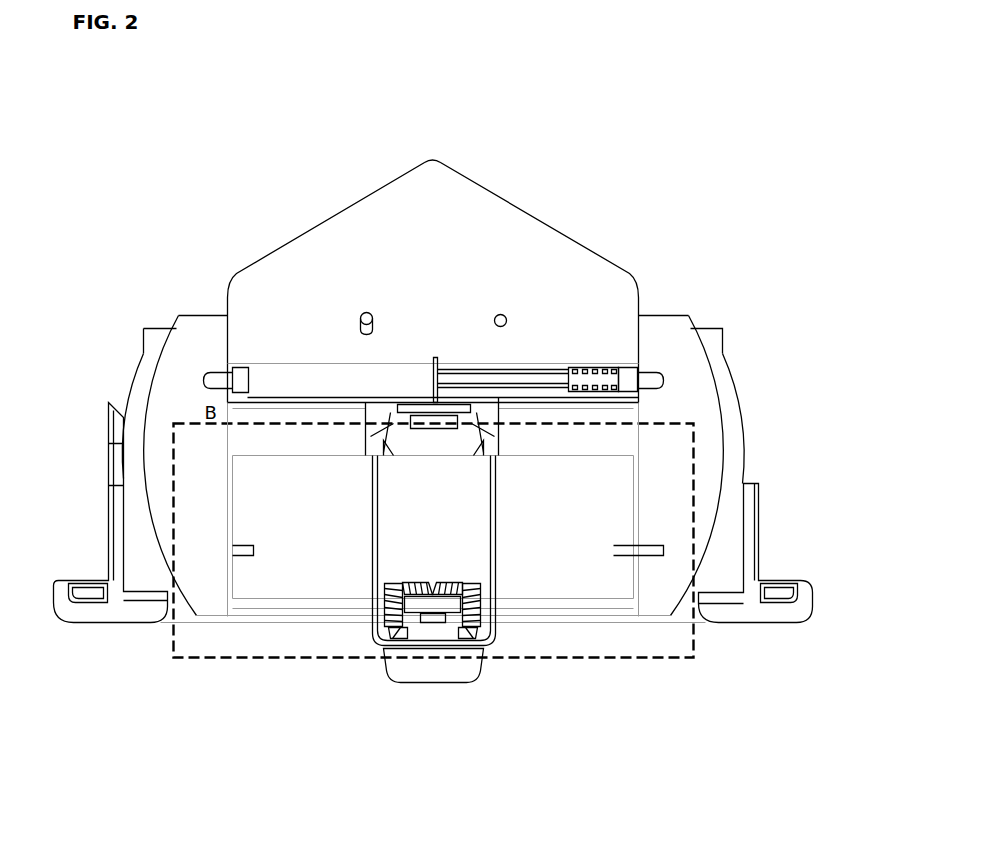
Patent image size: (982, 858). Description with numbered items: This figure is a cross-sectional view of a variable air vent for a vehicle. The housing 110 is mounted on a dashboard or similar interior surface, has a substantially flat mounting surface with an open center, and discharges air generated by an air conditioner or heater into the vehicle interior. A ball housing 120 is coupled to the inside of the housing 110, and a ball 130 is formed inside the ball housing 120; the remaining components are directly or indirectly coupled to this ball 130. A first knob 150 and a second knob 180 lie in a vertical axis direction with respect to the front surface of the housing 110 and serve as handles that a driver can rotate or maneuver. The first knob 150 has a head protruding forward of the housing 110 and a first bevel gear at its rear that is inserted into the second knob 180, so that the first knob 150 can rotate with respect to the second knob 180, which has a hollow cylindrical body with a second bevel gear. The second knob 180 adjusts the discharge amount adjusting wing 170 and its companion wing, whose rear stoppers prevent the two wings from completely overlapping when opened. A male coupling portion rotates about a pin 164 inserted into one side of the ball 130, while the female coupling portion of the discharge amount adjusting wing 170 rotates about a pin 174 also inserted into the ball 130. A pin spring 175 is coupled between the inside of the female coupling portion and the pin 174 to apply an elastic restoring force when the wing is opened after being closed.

The housing 110 is at (113, 612).
The ball housing 120 is at (153, 337).
The ball 130 is at (205, 338).
The first knob 150 is at (395, 683).
The pin 164 is at (208, 378).
The discharge amount adjusting wing 170 is at (505, 223).
The pin 174 is at (653, 382).
The pin spring 175 is at (603, 370).
The second knob 180 is at (495, 645).